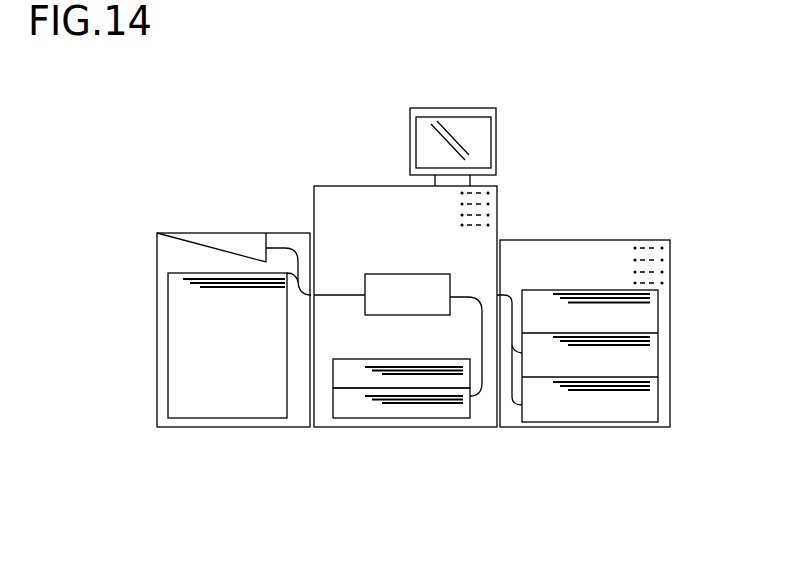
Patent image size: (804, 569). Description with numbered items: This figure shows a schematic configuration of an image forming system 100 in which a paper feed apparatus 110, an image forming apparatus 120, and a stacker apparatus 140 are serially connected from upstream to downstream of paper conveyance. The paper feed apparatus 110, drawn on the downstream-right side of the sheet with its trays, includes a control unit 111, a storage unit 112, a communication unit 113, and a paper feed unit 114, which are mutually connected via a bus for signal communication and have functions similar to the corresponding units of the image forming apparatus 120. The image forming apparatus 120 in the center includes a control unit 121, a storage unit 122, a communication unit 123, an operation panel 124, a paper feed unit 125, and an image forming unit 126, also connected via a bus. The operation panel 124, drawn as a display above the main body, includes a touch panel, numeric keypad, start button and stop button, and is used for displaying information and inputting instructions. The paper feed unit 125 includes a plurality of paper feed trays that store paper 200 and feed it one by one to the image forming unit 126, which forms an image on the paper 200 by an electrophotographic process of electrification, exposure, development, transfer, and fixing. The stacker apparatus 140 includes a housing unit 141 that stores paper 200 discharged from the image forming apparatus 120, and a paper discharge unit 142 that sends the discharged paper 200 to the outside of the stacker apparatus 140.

The image forming system 100 is at (137, 116).
The paper feed apparatus 110 is at (633, 240).
The control unit 111 is at (672, 247).
The storage unit 112 is at (672, 268).
The communication unit 113 is at (671, 283).
The paper feed unit 114 is at (533, 282).
The image forming apparatus 120 is at (343, 185).
The control unit 121 is at (498, 192).
The storage unit 122 is at (498, 204).
The communication unit 123 is at (498, 218).
The operation panel 124 is at (497, 133).
The paper feed unit 125 is at (360, 352).
The image forming unit 126 is at (412, 274).
The stacker apparatus 140 is at (285, 233).
The housing unit 141 is at (168, 325).
The paper discharge unit 142 is at (200, 244).
The paper 200 is at (427, 359).